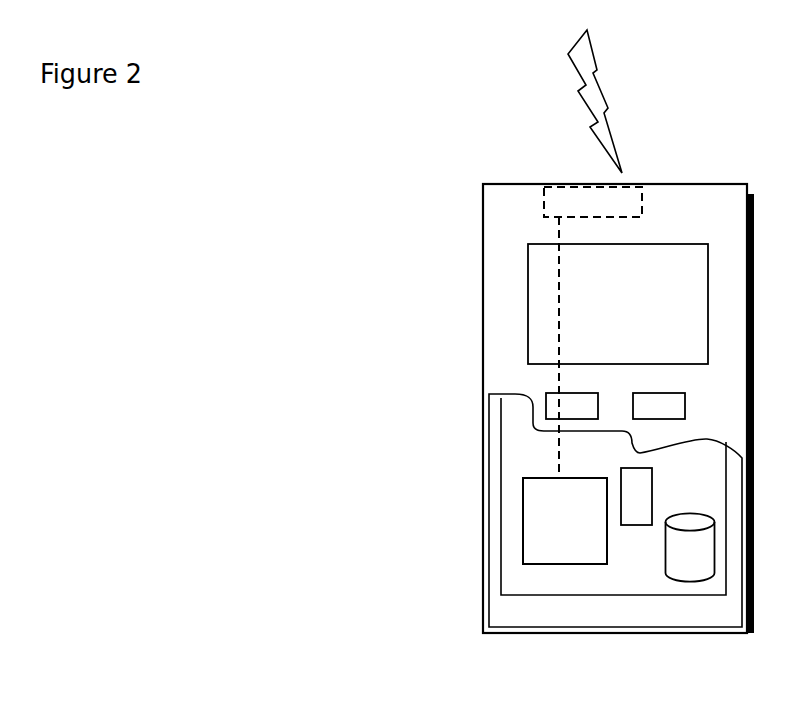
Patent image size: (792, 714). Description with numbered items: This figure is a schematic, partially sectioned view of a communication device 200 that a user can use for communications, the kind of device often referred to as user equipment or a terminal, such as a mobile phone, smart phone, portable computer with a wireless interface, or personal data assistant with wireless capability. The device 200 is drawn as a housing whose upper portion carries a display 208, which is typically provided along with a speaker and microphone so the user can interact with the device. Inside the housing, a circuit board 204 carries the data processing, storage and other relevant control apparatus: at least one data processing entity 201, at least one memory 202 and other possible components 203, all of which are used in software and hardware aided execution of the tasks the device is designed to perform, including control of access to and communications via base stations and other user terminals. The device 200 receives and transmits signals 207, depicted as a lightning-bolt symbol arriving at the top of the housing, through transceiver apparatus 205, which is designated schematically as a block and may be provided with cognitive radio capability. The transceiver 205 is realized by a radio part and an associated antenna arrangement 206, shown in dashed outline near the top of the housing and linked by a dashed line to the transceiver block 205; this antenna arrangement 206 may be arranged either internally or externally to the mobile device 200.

The communication device 200 is at (483, 222).
The data processing entity 201 is at (530, 505).
The memory 202 is at (685, 557).
The other components 203 is at (635, 483).
The circuit board 204 is at (523, 579).
The transceiver apparatus 205 is at (546, 403).
The antenna arrangement 206 is at (633, 197).
The signals 207 is at (620, 126).
The display 208 is at (545, 292).